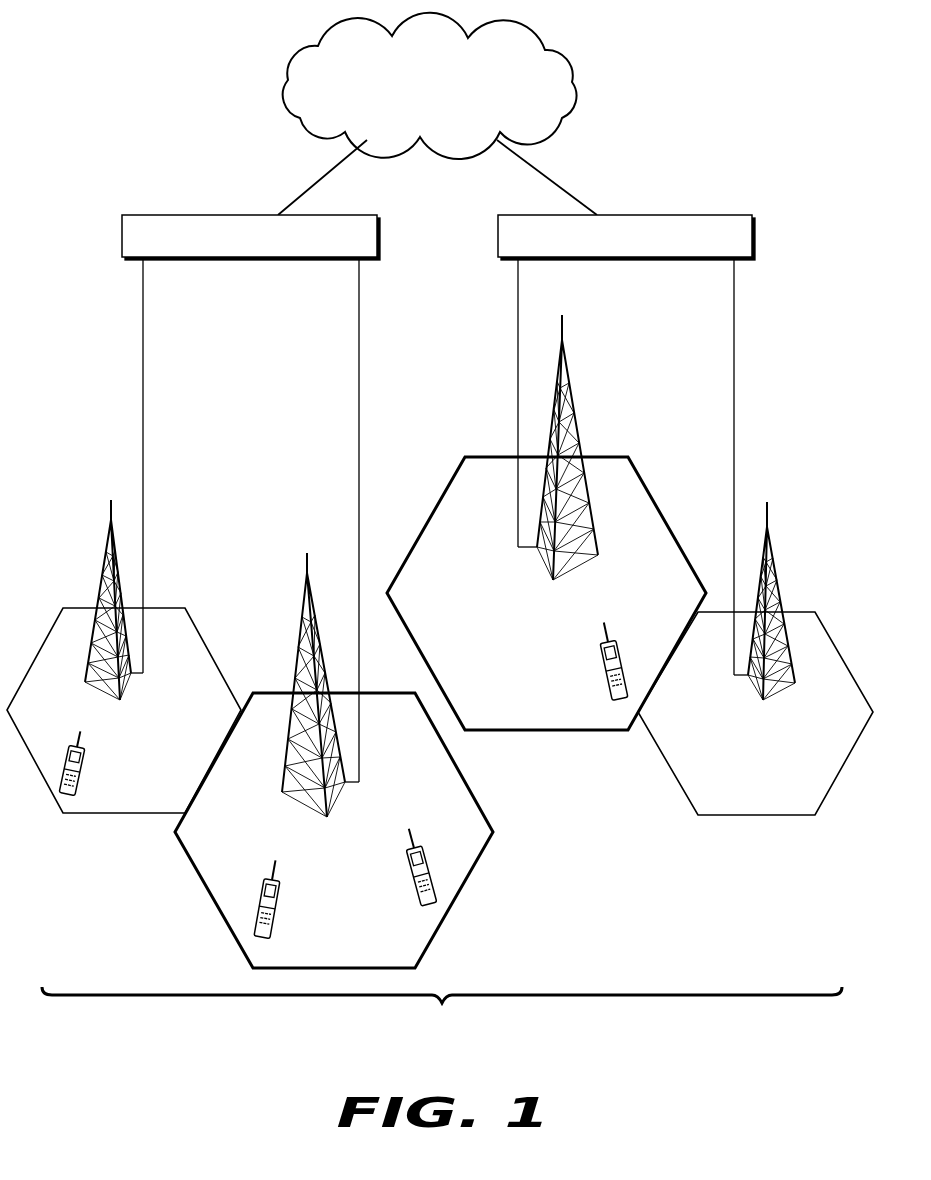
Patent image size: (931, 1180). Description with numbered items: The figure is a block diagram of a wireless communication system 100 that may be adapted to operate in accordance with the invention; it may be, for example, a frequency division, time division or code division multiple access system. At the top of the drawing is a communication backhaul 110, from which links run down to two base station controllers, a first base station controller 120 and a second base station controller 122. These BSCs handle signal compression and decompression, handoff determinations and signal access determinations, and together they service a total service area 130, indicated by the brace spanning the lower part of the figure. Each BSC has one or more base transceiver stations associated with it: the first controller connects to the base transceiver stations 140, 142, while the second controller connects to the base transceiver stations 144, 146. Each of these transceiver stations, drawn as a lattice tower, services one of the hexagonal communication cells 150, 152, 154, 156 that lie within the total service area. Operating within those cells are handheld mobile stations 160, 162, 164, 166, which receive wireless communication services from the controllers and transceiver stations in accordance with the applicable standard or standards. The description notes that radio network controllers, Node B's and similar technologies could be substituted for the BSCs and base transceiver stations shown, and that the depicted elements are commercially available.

The wireless communication system 100 is at (288, 1112).
The communication backhaul 110 is at (290, 69).
The base station controller 120 is at (122, 237).
The base station controller 122 is at (498, 237).
The total service area 130 is at (442, 1011).
The base transceiver station 140 is at (121, 688).
The base transceiver station 142 is at (329, 806).
The base transceiver station 144 is at (549, 570).
The base transceiver station 146 is at (758, 690).
The communication cell 150 is at (123, 814).
The communication cell 152 is at (455, 892).
The communication cell 154 is at (545, 731).
The communication cell 156 is at (755, 816).
The mobile station 160 is at (86, 752).
The mobile station 162 is at (280, 903).
The mobile station 164 is at (407, 870).
The mobile station 166 is at (600, 665).